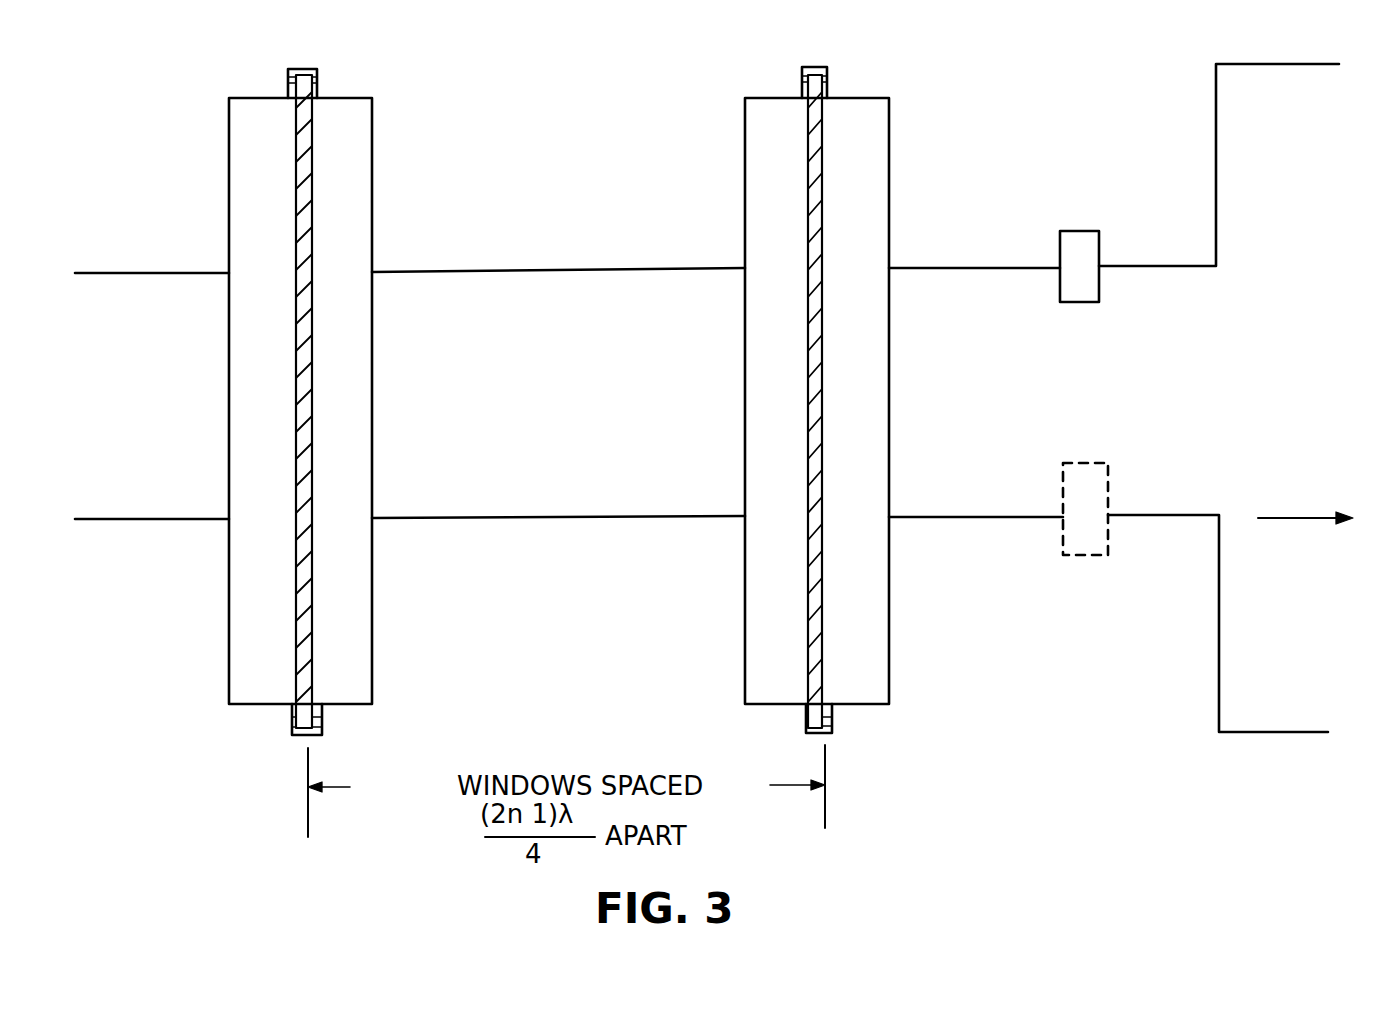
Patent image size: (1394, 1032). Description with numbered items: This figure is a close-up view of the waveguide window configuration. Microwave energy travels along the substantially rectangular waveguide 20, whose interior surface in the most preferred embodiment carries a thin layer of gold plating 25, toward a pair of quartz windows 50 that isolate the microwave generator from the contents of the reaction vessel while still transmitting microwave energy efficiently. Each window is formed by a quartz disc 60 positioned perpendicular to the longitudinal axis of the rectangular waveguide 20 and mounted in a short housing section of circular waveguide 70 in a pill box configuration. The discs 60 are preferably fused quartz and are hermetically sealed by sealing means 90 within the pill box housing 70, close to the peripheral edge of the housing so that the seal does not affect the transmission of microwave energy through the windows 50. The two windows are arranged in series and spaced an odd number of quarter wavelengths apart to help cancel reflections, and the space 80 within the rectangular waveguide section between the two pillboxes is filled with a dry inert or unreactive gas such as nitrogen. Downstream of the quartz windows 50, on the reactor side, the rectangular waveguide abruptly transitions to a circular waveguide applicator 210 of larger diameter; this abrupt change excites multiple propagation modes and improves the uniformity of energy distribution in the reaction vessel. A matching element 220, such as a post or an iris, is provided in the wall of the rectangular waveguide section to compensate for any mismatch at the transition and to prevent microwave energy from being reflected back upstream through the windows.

The waveguide 20 is at (150, 273).
The gold plating 25 is at (958, 268).
The quartz windows 50 is at (583, 118).
The quartz discs 60 is at (308, 228).
The circular waveguide housing sections 70 is at (260, 704).
The space 80 is at (577, 404).
The sealing means 90 is at (317, 83).
The circular waveguide applicator 210 is at (1212, 740).
The matching element 220 is at (1062, 247).